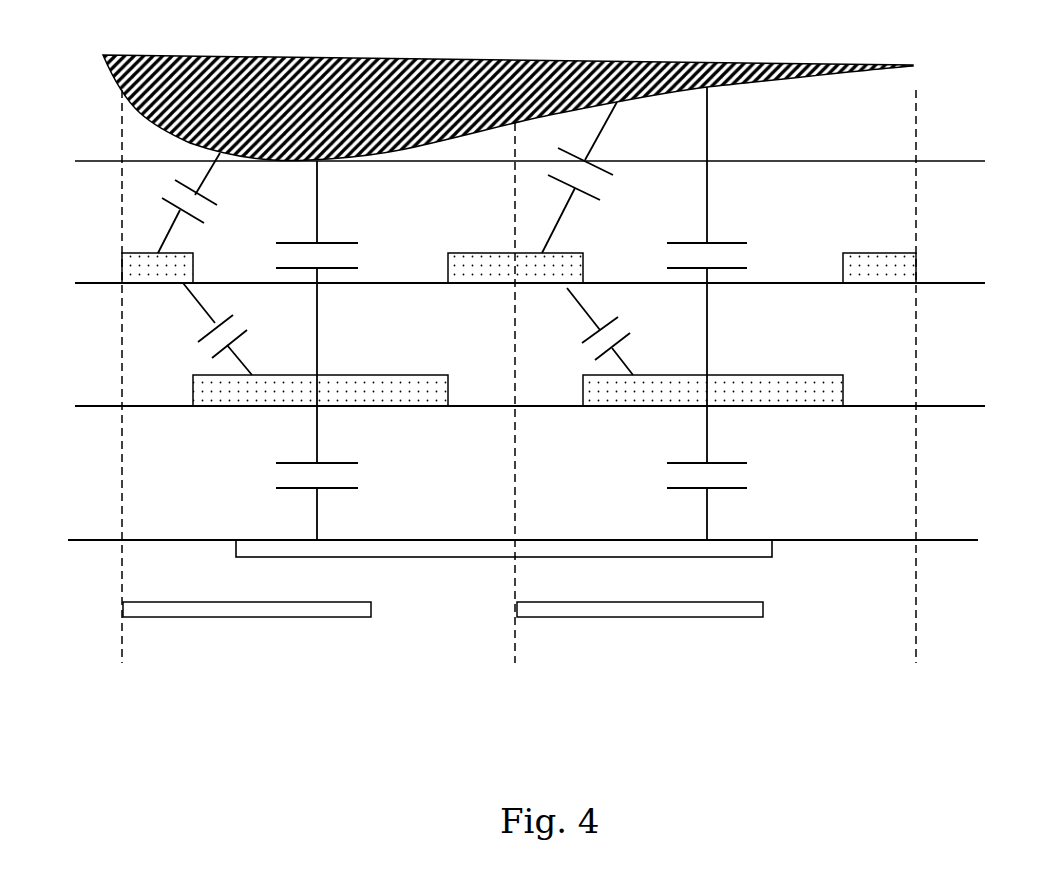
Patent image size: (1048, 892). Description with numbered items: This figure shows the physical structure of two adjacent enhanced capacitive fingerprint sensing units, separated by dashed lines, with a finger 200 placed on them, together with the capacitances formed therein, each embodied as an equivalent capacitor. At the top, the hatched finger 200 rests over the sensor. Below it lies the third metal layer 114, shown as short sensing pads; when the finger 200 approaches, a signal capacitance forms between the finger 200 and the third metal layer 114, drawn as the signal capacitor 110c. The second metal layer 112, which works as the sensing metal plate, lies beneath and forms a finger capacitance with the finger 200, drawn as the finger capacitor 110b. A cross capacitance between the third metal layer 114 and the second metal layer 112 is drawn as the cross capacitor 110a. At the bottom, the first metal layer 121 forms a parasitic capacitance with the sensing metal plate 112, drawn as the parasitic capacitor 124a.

The finger 200 is at (755, 75).
The third metal layer 114 is at (916, 268).
The second metal layer 112 is at (843, 392).
The cross capacitor 110a is at (227, 350).
The finger capacitor 110b is at (330, 245).
The signal capacitor 110c is at (203, 195).
The parasitic capacitor 124a is at (352, 463).
The first metal layer 121 is at (772, 548).